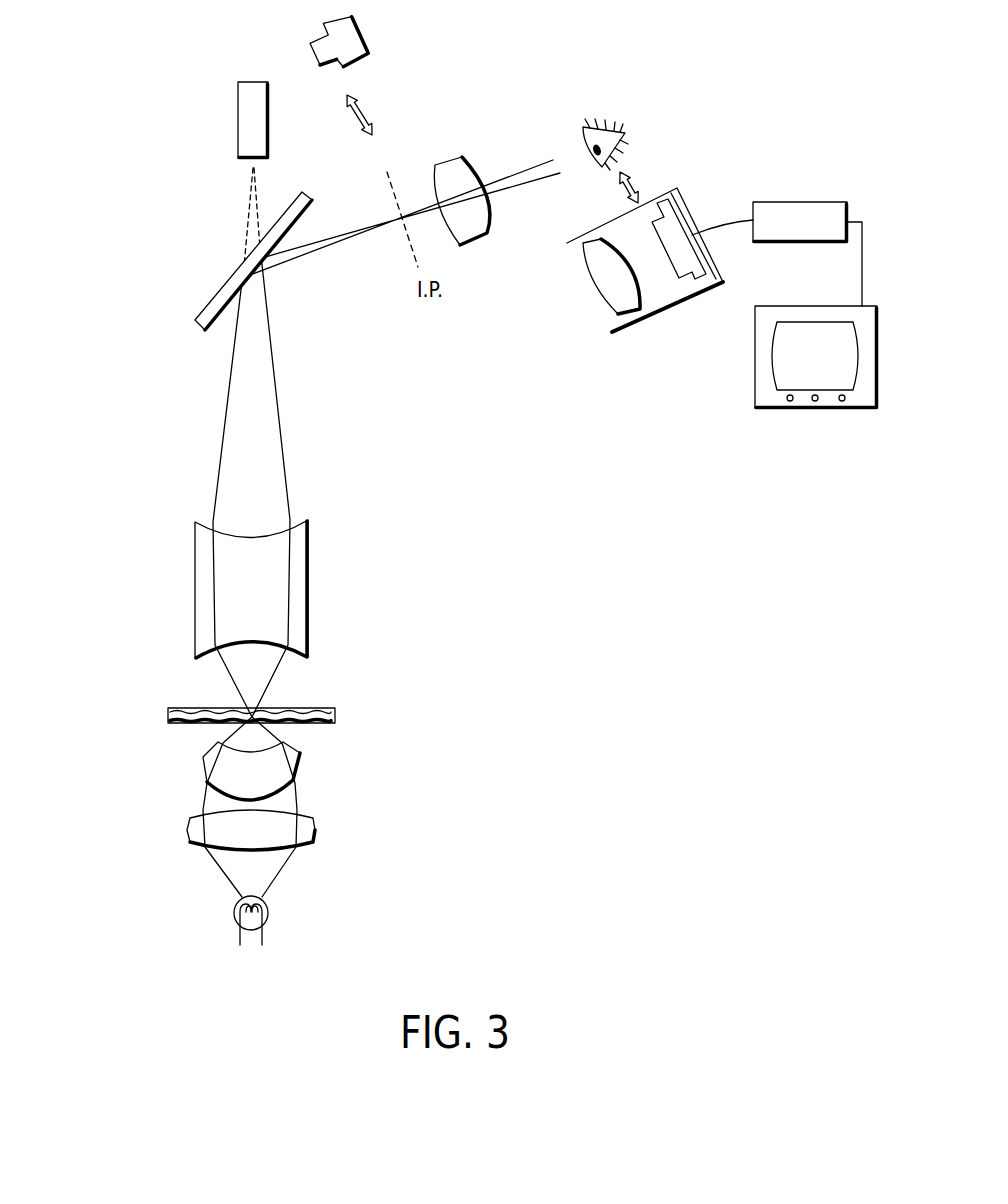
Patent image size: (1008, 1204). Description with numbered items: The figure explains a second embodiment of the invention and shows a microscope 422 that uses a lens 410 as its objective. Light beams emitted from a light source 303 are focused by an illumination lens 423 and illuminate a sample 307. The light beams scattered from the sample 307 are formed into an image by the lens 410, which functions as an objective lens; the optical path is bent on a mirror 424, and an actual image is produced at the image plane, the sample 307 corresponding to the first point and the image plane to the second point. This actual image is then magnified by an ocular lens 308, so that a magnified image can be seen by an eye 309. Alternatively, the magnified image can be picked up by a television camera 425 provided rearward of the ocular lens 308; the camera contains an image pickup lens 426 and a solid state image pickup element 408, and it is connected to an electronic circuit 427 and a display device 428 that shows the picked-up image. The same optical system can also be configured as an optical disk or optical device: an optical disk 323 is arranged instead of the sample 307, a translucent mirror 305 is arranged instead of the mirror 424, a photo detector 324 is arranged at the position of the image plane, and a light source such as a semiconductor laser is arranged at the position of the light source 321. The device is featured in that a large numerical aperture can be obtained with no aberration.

The light source 303 is at (270, 912).
The translucent mirror 305 is at (253, 261).
The sample 307 is at (335, 710).
The ocular lens 308 is at (447, 157).
The eye 309 is at (613, 122).
The light source 321 is at (238, 117).
The optical disk 323 is at (251, 715).
The photo detector 324 is at (366, 34).
The solid state image pickup element 408 is at (670, 217).
The lens 410 is at (308, 568).
The microscope 422 is at (103, 150).
The illumination lens 423 is at (383, 743).
The mirror 424 is at (197, 308).
The television camera 425 is at (650, 317).
The image pickup lens 426 is at (608, 295).
The electronic circuit 427 is at (795, 200).
The display device 428 is at (773, 410).